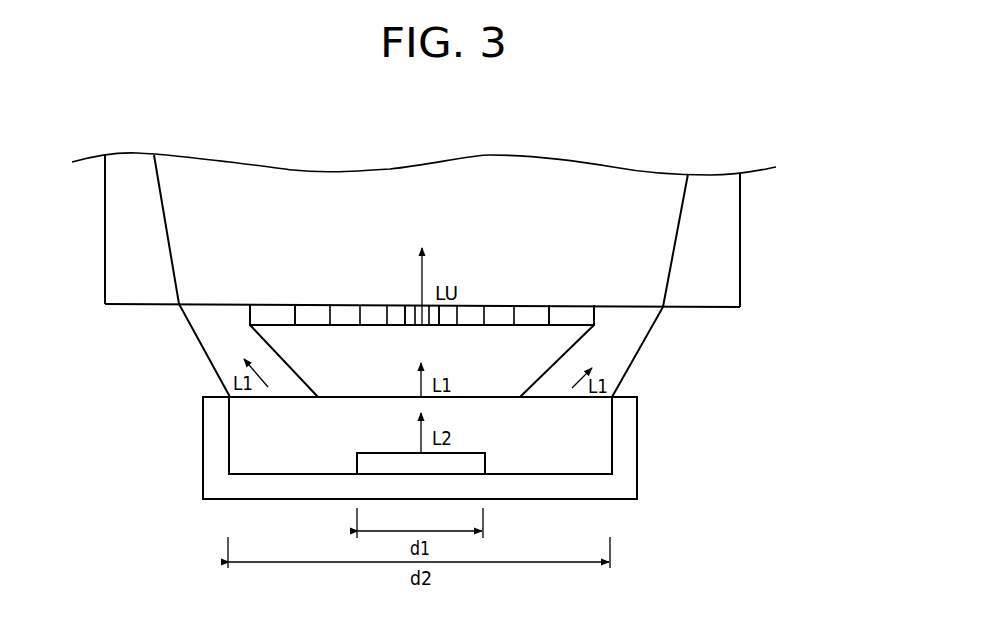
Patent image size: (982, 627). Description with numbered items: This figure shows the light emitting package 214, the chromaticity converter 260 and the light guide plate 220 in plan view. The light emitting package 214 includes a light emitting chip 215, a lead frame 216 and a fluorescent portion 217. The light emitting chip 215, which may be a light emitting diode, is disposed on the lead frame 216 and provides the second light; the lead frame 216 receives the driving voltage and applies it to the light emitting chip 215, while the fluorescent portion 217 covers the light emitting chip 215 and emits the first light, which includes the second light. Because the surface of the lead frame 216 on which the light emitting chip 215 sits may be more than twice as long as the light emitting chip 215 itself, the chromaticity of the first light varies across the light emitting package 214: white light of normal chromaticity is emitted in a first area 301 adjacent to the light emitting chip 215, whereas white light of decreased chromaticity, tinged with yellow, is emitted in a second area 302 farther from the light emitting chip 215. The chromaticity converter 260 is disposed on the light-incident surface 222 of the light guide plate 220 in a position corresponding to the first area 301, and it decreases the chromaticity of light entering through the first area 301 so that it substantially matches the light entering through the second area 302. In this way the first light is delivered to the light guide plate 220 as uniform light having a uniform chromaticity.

The light guide plate 220 is at (723, 242).
The light-incident surface 222 is at (723, 309).
The chromaticity converter 260 is at (594, 318).
The first area 301 is at (420, 331).
The second area 302 is at (421, 334).
The light emitting package 214 is at (483, 448).
The light emitting chip 215 is at (478, 463).
The lead frame 216 is at (625, 478).
The fluorescent portion 217 is at (587, 423).